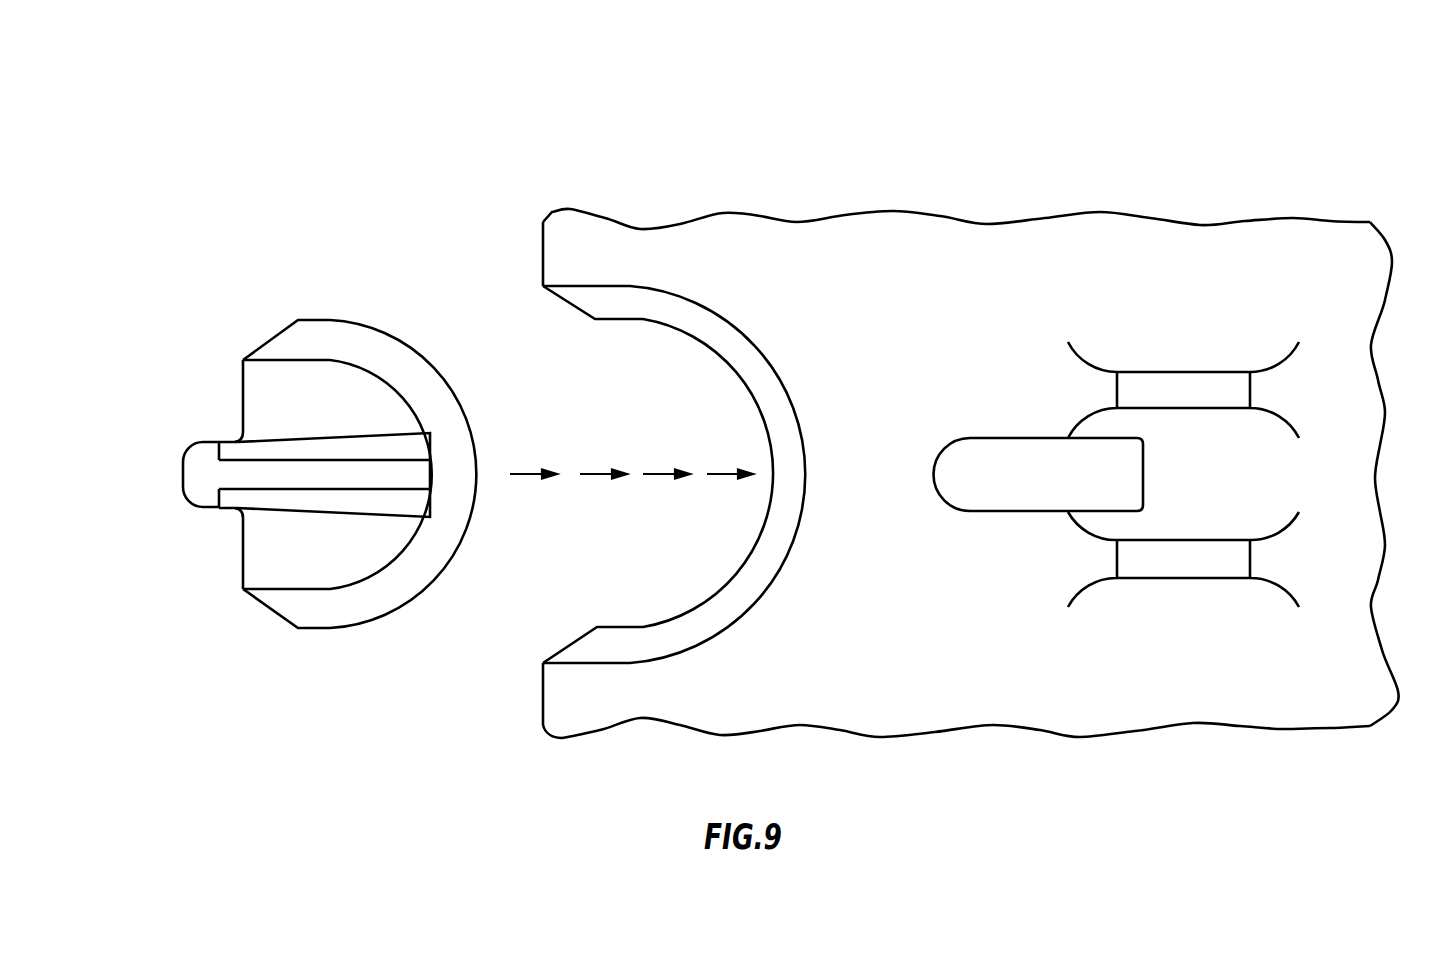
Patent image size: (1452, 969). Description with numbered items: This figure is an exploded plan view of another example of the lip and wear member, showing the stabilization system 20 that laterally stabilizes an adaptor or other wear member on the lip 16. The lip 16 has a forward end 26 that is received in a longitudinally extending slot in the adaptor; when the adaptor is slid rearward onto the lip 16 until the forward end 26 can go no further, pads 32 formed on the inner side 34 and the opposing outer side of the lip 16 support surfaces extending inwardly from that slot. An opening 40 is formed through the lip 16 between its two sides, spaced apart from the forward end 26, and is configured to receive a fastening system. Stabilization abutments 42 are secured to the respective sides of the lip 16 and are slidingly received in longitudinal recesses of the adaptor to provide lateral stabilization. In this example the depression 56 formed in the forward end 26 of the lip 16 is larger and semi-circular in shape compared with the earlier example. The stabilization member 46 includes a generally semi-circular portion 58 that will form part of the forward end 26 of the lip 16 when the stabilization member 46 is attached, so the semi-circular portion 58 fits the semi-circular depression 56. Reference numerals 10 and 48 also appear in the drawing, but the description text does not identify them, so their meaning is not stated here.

The connector assembly 10 is at (1334, 126).
The lip 16 is at (1082, 742).
The stabilization system 20 is at (698, 474).
The forward end 26 is at (540, 240).
The pads 32 is at (1187, 397).
The inner side 34 is at (860, 226).
The opening 40 is at (1029, 505).
The stabilization abutments 42 is at (319, 478).
The stabilization member 46 is at (208, 517).
The head 48 is at (181, 474).
The depression 56 is at (749, 391).
The semi-circular portion 58 is at (421, 353).